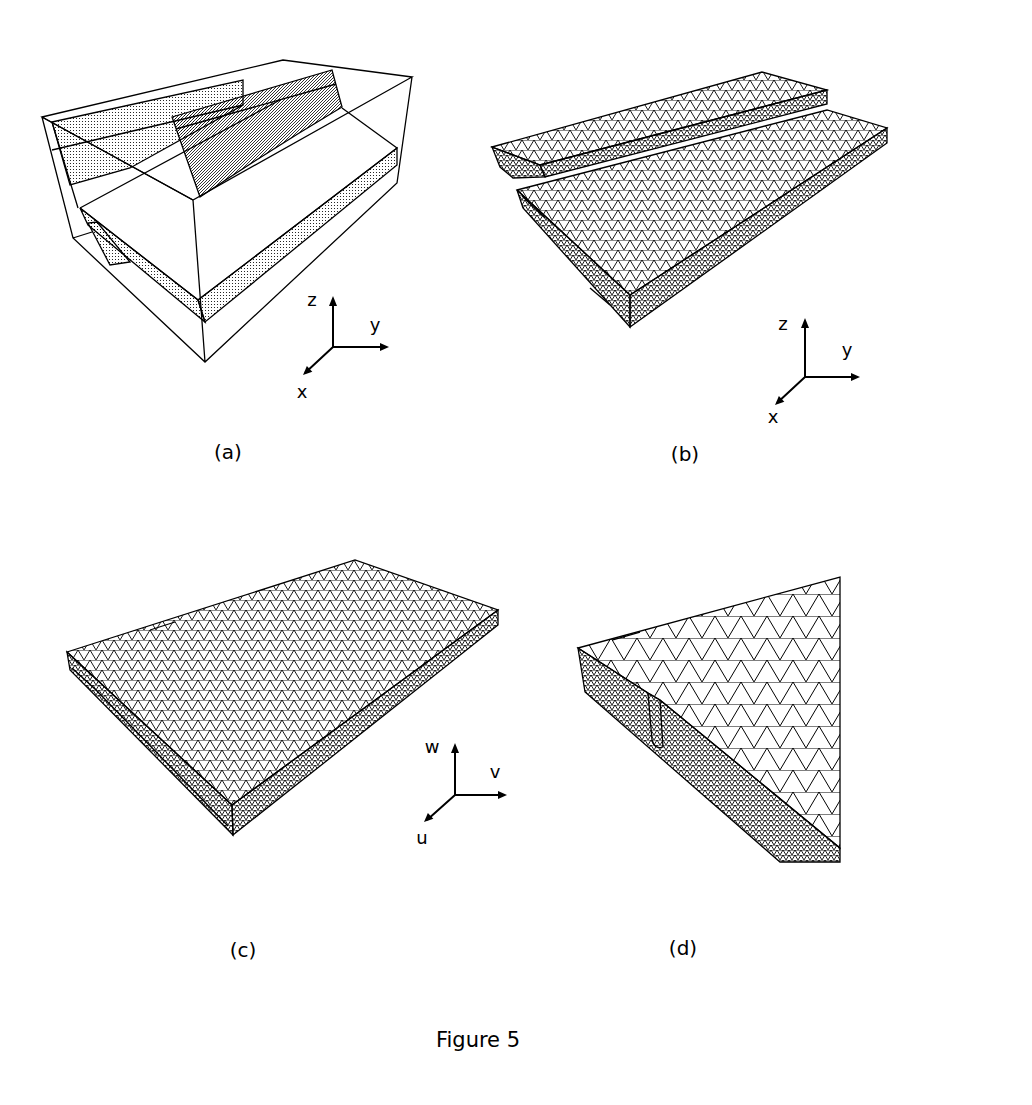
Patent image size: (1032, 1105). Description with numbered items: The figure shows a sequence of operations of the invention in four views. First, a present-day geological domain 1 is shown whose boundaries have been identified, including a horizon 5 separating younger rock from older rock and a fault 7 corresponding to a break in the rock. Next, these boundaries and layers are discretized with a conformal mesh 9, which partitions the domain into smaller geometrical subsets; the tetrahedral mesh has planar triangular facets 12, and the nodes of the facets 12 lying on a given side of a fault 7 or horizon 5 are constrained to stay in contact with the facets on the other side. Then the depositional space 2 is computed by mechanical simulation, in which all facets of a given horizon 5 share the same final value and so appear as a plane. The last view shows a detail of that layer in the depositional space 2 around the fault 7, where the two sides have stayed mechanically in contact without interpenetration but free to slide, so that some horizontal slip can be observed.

The geological domain 1 is at (104, 98).
The depositional space 2 is at (164, 616).
The horizon 5 is at (152, 272).
The fault 7 is at (138, 158).
The mesh 9 is at (598, 294).
The facets 12 is at (545, 216).